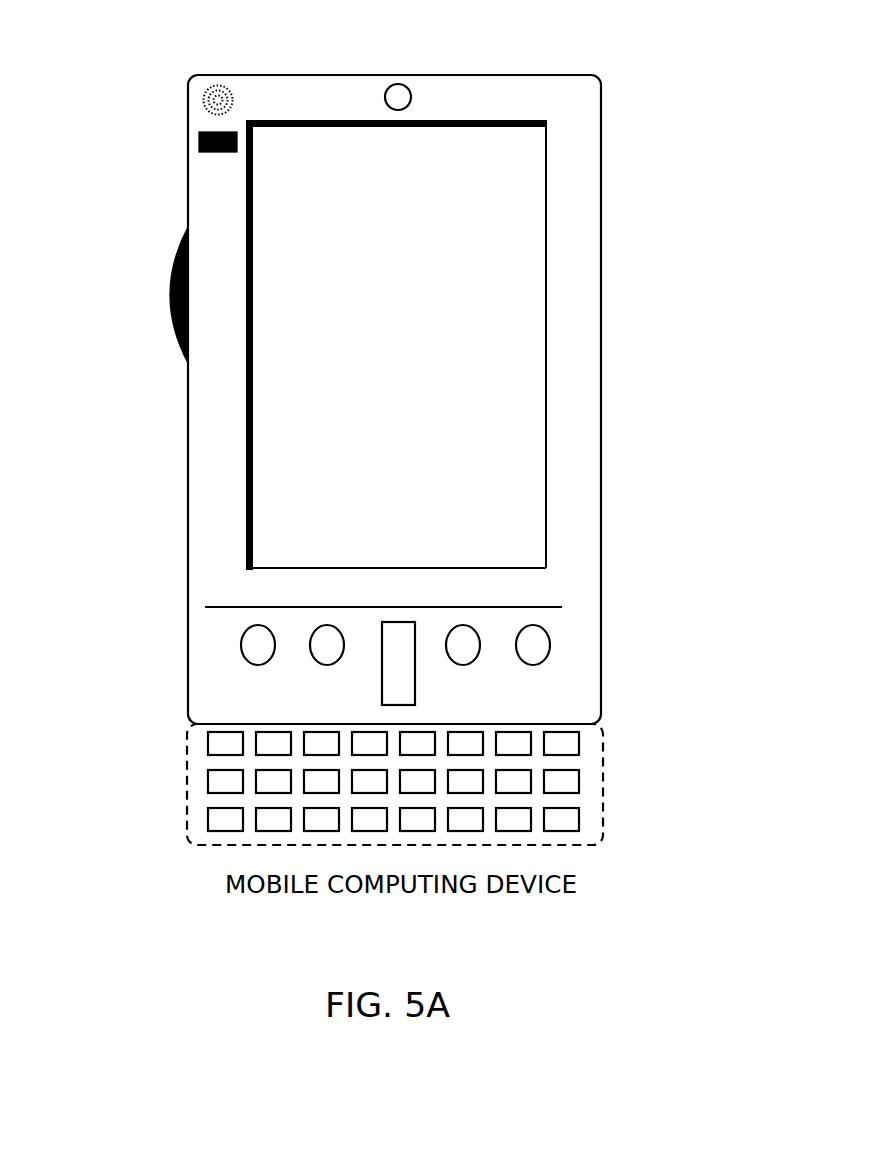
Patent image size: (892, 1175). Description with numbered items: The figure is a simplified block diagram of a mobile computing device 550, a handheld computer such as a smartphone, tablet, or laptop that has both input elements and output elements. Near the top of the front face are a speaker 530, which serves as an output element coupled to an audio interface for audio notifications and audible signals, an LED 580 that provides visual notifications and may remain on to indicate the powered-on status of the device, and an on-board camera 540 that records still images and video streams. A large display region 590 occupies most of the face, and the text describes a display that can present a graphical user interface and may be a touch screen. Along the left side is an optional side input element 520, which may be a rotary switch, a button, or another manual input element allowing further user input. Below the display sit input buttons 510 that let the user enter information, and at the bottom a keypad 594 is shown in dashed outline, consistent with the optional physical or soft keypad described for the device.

The input buttons 510 is at (537, 657).
The side input element 520 is at (165, 300).
The speaker 530 is at (202, 90).
The on-board camera 540 is at (405, 93).
The mobile computing device 550 is at (602, 93).
The LED 580 is at (200, 133).
The display screen 590 is at (273, 505).
The keyboard 594 is at (187, 812).